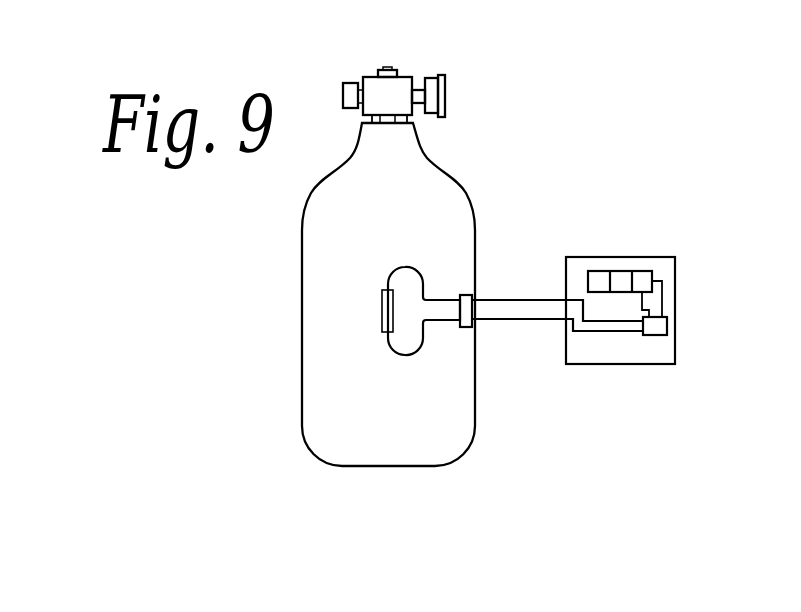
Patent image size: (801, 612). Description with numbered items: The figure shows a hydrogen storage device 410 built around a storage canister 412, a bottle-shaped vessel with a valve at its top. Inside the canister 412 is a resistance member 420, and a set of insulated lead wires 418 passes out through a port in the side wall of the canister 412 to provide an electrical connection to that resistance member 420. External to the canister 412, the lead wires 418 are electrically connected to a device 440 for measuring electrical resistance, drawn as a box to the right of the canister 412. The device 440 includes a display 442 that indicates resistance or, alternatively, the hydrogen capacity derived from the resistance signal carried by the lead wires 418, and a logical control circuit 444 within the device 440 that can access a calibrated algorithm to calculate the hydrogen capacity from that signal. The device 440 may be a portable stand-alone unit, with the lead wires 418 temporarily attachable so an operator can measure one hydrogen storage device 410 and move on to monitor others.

The hydrogen storage device 410 is at (528, 110).
The storage canister 412 is at (471, 204).
The insulated lead wires 418 is at (542, 300).
The resistance member 420 is at (382, 320).
The device for measuring electrical resistance 440 is at (668, 277).
The display 442 is at (620, 270).
The logical control circuit 444 is at (667, 325).